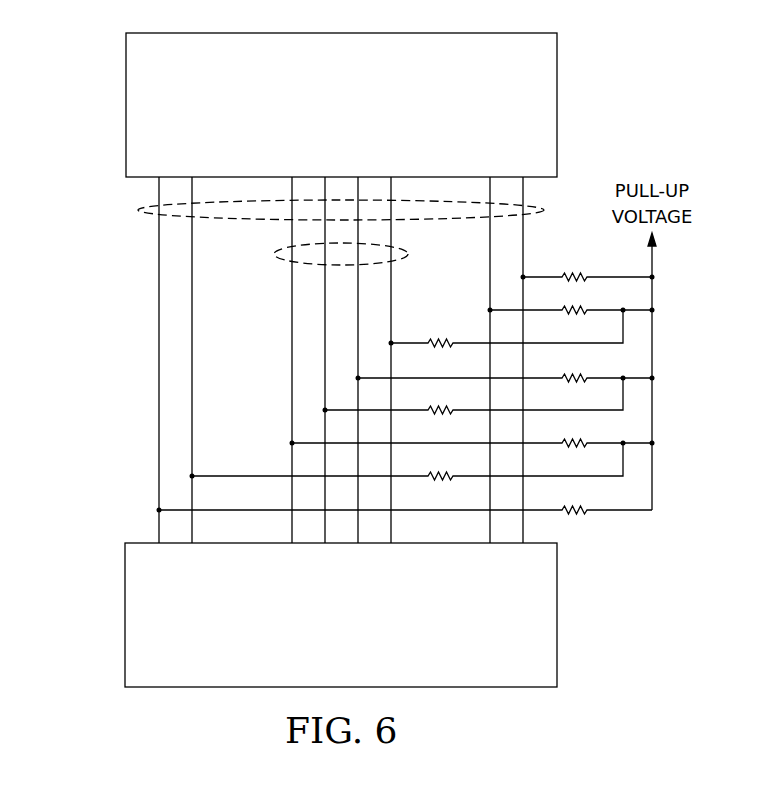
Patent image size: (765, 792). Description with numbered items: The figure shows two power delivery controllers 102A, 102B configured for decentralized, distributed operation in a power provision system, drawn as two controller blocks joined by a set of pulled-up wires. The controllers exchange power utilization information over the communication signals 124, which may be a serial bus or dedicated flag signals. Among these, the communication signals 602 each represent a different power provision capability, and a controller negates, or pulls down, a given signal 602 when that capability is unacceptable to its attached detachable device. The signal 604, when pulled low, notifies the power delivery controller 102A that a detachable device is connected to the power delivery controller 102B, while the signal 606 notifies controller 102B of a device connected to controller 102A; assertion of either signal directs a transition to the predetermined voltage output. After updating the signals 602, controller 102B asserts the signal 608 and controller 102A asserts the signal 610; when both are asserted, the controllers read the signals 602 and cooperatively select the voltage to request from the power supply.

The power delivery controller 102A is at (126, 108).
The power delivery controller 102B is at (125, 614).
The communication signals 124 is at (138, 210).
The communication signals 602 is at (275, 255).
The signal 604 is at (158, 350).
The signal 606 is at (192, 372).
The signal 608 is at (490, 265).
The signal 610 is at (523, 258).